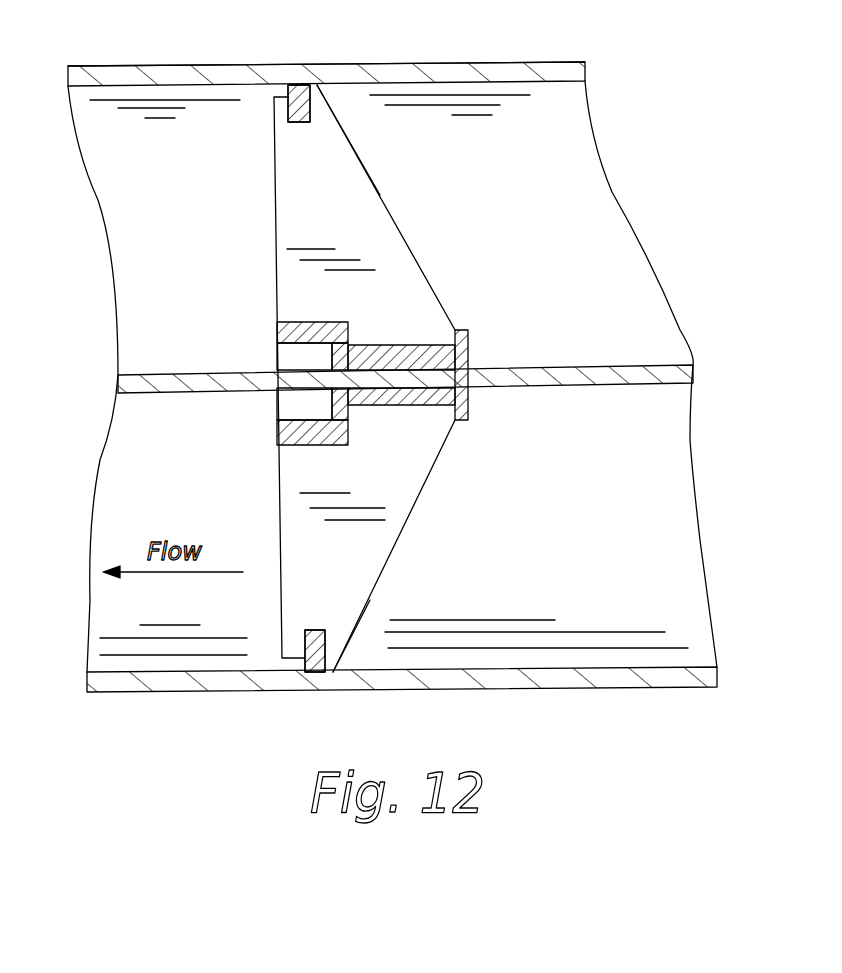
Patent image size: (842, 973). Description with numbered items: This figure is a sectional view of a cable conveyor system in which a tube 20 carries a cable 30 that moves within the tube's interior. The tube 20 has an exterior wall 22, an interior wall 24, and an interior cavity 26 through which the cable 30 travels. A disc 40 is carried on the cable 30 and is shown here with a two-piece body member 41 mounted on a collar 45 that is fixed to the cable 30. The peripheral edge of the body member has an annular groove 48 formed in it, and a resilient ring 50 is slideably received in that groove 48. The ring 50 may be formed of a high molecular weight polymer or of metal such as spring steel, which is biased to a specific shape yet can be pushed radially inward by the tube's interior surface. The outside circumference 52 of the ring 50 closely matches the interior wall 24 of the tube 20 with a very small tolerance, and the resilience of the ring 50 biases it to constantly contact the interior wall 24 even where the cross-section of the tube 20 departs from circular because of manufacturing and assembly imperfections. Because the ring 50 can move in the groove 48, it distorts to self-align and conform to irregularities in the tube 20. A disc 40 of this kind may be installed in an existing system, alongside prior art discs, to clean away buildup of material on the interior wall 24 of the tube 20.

The tube 20 is at (203, 64).
The exterior wall 22 is at (424, 62).
The interior wall 24 is at (200, 152).
The interior cavity 26 is at (572, 204).
The cable 30 is at (610, 362).
The disc 40 is at (412, 229).
The two-piece body member 41 is at (393, 314).
The collar 45 is at (378, 407).
The annular groove 48 is at (296, 123).
The resilient ring 50 is at (328, 98).
The outside circumference 52 is at (294, 84).